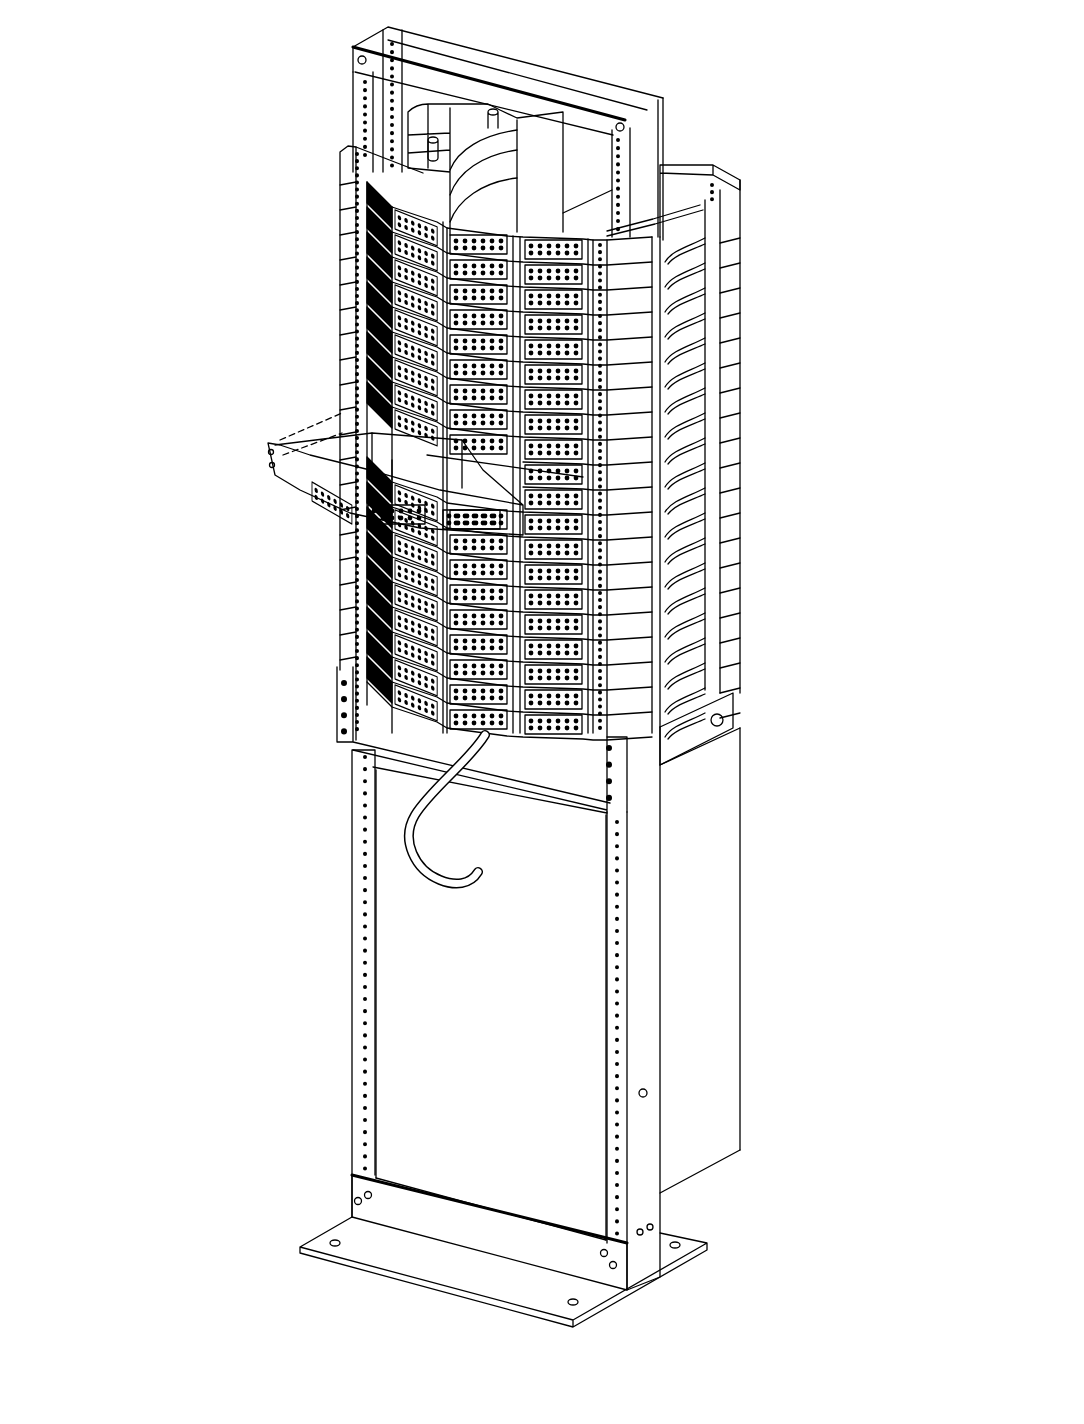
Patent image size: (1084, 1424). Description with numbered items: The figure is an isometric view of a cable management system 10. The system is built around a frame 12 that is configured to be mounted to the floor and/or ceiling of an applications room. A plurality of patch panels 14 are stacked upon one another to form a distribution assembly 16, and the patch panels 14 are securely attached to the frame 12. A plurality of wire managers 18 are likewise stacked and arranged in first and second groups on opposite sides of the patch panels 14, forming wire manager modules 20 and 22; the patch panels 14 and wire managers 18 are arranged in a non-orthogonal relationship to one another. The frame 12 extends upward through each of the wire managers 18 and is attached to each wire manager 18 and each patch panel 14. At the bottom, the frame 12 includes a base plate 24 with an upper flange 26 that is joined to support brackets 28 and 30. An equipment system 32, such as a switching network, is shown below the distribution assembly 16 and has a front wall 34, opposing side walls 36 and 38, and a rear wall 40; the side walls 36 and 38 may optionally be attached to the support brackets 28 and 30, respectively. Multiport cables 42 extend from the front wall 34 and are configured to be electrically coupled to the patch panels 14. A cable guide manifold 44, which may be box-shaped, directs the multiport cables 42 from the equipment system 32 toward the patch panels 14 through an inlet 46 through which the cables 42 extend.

The cable management system 10 is at (294, 44).
The frame 12 is at (556, 61).
The patch panels 14 is at (313, 440).
The distribution assembly 16 is at (527, 229).
The wire managers 18 is at (743, 252).
The wire manager module 20 is at (700, 168).
The wire manager module 22 is at (338, 140).
The base plate 24 is at (380, 1253).
The upper flange 26 is at (412, 1207).
The support bracket 28 is at (630, 1185).
The support bracket 30 is at (352, 930).
The equipment system 32 is at (510, 968).
The front wall 34 is at (378, 1062).
The side wall 36 is at (724, 1000).
The side wall 38 is at (420, 910).
The rear wall 40 is at (730, 863).
The multiport cables 42 is at (415, 838).
The cable guide manifold 44 is at (722, 718).
The inlet 46 is at (398, 729).